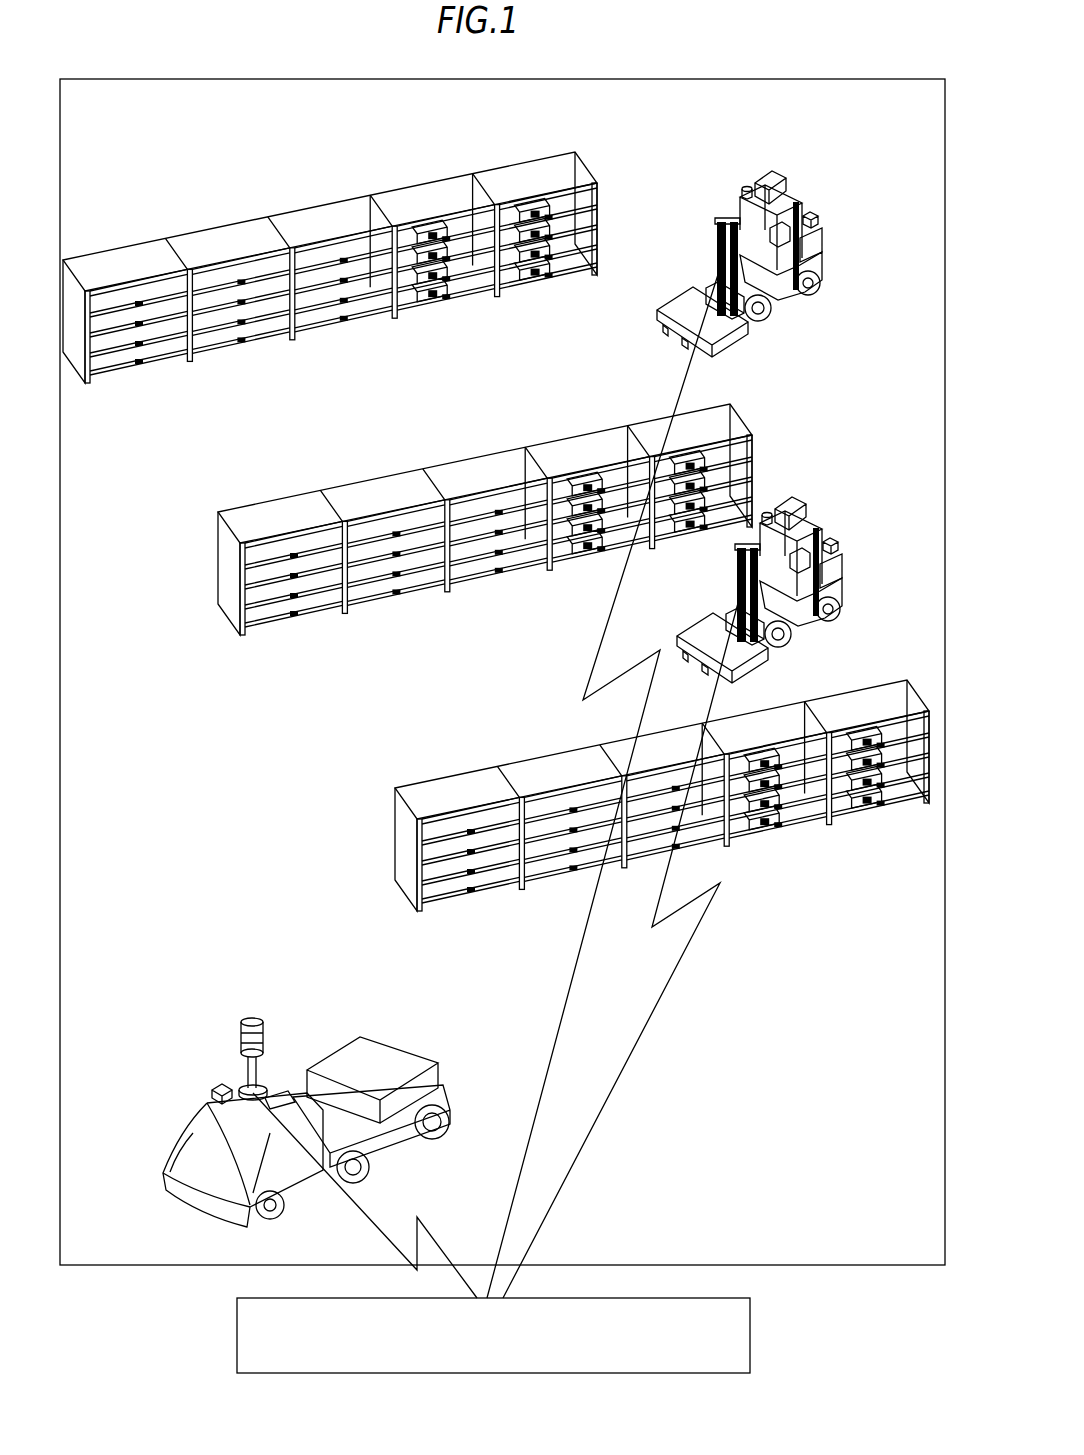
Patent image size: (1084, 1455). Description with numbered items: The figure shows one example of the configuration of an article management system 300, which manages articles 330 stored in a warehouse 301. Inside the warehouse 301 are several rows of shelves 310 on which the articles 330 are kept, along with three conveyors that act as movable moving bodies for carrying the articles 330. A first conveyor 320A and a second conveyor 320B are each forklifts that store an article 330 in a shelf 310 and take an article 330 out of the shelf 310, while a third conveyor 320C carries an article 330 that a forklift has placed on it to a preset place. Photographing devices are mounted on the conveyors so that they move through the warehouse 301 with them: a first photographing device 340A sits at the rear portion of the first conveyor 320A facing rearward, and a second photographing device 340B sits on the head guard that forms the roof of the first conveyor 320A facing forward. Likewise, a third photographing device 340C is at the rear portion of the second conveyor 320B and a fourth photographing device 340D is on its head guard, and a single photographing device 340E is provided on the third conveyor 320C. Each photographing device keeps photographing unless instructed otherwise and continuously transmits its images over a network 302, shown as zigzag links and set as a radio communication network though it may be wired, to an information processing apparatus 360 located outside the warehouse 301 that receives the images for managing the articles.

The article management system 300 is at (773, 79).
The warehouse 301 is at (650, 79).
The network 302 is at (630, 1056).
The shelf 310 is at (582, 173).
The first conveyor 320A is at (788, 292).
The second conveyor 320B is at (800, 612).
The third conveyor 320C is at (297, 1097).
The article 330 is at (583, 213).
The first photographing device 340A is at (812, 213).
The second photographing device 340B is at (750, 187).
The third photographing device 340C is at (834, 540).
The fourth photographing device 340D is at (770, 512).
The photographing device 340E is at (218, 1088).
The information processing apparatus 360 is at (750, 1335).